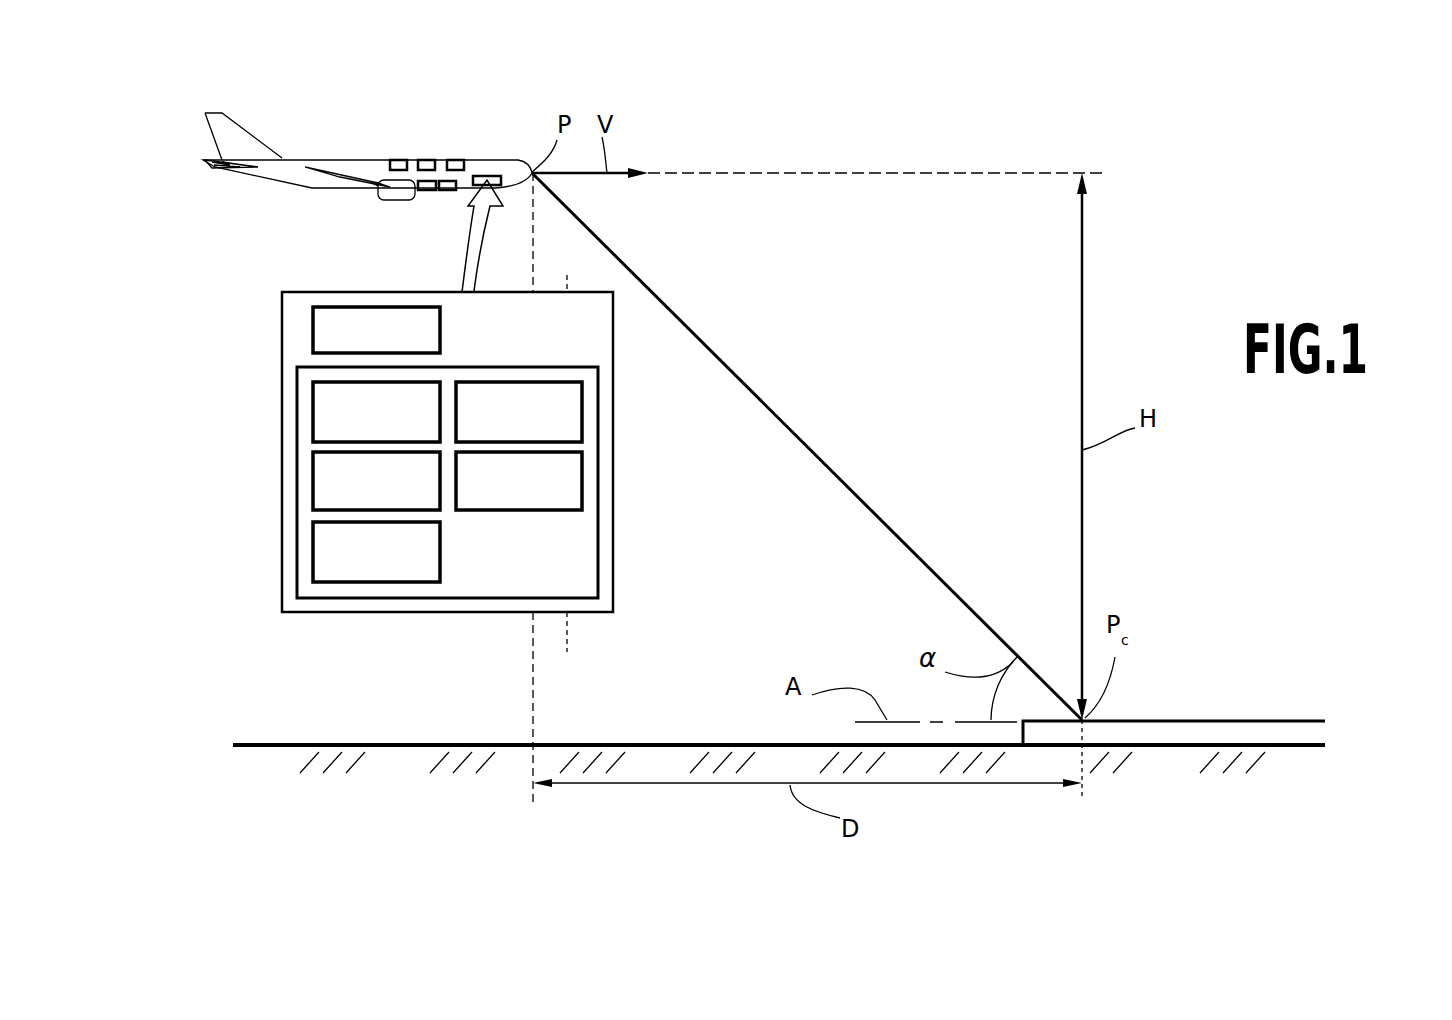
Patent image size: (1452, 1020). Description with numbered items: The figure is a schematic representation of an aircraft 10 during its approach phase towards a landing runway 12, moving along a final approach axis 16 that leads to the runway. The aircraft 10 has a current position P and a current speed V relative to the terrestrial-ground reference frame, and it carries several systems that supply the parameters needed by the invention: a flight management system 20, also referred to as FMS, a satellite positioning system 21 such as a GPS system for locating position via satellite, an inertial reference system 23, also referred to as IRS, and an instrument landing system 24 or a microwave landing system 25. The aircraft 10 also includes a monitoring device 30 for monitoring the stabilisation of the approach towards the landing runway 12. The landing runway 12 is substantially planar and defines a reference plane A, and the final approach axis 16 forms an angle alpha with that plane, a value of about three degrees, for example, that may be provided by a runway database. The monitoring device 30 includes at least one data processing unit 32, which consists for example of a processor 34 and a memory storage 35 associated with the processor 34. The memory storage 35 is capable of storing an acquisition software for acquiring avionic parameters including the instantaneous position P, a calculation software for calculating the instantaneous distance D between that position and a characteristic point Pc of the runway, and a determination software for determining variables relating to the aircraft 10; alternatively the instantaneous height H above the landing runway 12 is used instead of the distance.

The aircraft 10 is at (547, 105).
The landing runway 12 is at (1172, 720).
The final approach axis 16 is at (713, 352).
The flight management system 20 is at (427, 160).
The satellite positioning system 21 is at (457, 160).
The inertial reference system 23 is at (447, 191).
The instrument landing system 24 is at (395, 160).
The microwave landing system 25 is at (425, 191).
The monitoring device 30 is at (508, 186).
The data processing unit 32 is at (451, 452).
The processor 34 is at (320, 329).
The memory storage 35 is at (600, 472).